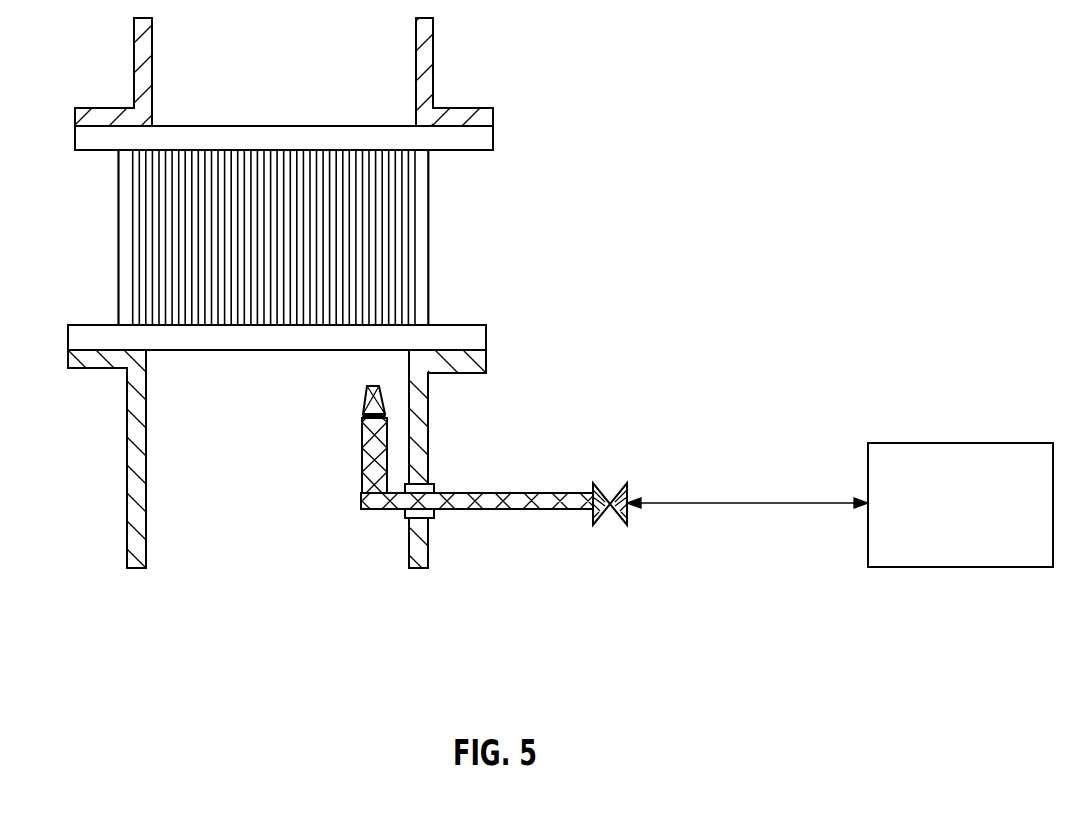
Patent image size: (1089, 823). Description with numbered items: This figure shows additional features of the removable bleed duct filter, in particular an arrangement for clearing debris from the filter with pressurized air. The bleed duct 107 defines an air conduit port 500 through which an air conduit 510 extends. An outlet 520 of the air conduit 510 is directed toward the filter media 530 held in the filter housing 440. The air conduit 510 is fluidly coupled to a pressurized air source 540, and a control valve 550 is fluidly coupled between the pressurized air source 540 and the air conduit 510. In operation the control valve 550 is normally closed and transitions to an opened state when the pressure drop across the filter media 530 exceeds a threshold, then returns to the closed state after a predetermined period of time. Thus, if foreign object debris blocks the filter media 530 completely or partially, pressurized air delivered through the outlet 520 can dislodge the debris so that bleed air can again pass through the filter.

The bleed duct 107 is at (429, 397).
The filter housing 440 is at (429, 216).
The air conduit port 500 is at (431, 520).
The air conduit 510 is at (537, 511).
The outlet 520 is at (366, 399).
The filter media 530 is at (393, 266).
The pressurized air source 540 is at (960, 567).
The control valve 550 is at (615, 515).